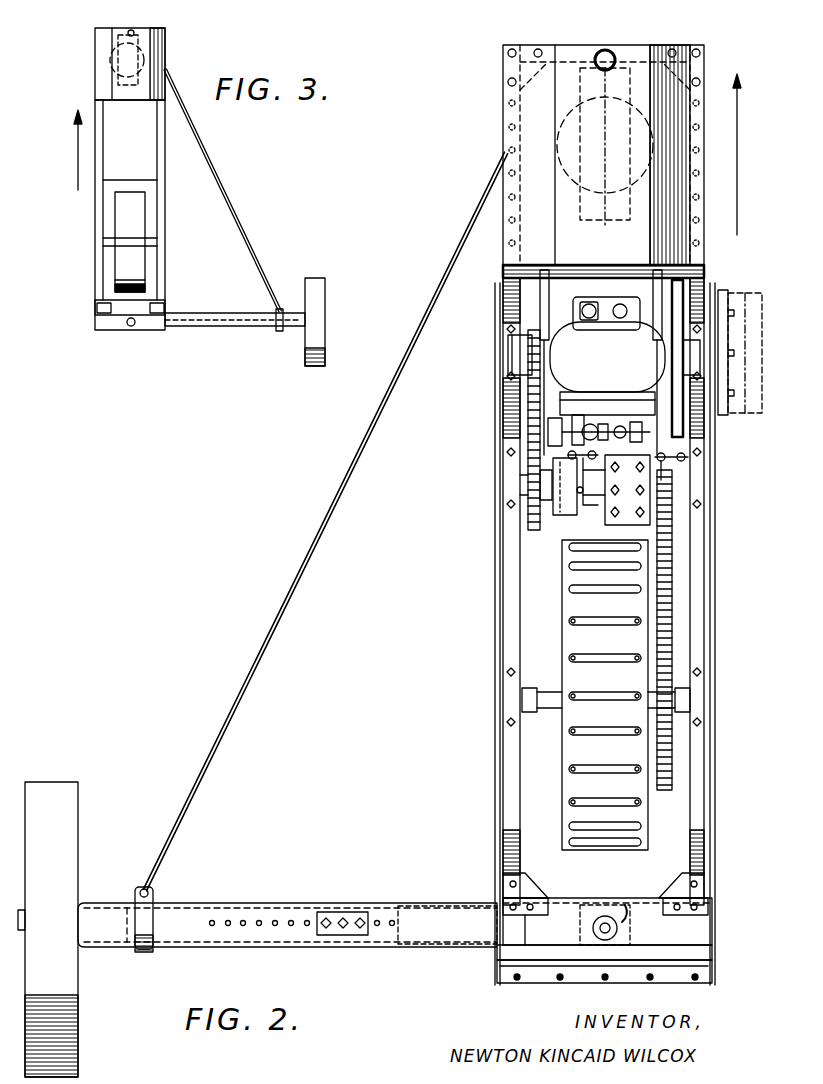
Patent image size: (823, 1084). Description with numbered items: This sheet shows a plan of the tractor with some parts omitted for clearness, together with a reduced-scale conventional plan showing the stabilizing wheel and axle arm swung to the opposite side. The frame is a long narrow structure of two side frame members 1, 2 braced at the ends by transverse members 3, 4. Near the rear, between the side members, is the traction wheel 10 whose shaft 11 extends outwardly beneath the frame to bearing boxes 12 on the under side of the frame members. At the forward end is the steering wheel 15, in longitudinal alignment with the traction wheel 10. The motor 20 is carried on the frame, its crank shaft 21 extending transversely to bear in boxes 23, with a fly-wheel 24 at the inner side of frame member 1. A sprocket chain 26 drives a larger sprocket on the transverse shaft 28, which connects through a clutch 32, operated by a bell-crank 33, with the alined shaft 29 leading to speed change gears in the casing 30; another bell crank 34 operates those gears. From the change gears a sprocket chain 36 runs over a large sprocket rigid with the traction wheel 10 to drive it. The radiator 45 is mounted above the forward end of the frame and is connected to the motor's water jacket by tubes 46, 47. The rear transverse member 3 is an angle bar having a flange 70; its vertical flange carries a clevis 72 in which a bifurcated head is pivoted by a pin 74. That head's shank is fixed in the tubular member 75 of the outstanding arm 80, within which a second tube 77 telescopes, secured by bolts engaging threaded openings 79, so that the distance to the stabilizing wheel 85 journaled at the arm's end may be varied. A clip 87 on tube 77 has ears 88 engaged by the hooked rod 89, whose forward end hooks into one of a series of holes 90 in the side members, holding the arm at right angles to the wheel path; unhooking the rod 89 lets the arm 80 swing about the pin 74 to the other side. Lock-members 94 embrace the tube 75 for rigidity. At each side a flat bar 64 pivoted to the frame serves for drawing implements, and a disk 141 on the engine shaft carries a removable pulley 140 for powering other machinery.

In FIG. 2, the side frame member 1 is at (700, 590).
In FIG. 2, the side frame member 2 is at (520, 600).
In FIG. 2, the transverse member 3 is at (627, 905).
In FIG. 2, the transverse member 4 is at (560, 62).
In FIG. 3, the traction wheel 10 is at (130, 242).
In FIG. 2, the traction wheel 10 is at (605, 695).
In FIG. 2, the shaft 11 is at (545, 712).
In FIG. 2, the bearing boxes 12 is at (530, 686).
In FIG. 3, the steering wheel 15 is at (143, 40).
In FIG. 2, the steering wheel 15 is at (618, 222).
In FIG. 2, the motor 20 is at (607, 357).
In FIG. 2, the crank shaft 21 is at (660, 318).
In FIG. 2, the boxes 23 is at (510, 362).
In FIG. 2, the fly-wheel 24 is at (676, 400).
In FIG. 2, the sprocket chain 26 is at (530, 425).
In FIG. 2, the transverse shaft 28 is at (528, 482).
In FIG. 2, the alined shaft 29 is at (592, 507).
In FIG. 2, the casing 30 is at (627, 490).
In FIG. 2, the clutch 32 is at (565, 516).
In FIG. 2, the bell-crank 33 is at (593, 449).
In FIG. 2, the bell crank 34 is at (675, 450).
In FIG. 2, the sprocket chain 36 is at (670, 625).
In FIG. 2, the radiator 45 is at (591, 145).
In FIG. 2, the tube 46 is at (560, 270).
In FIG. 2, the tube 47 is at (607, 325).
In FIG. 2, the flat bar 64 is at (497, 580).
In FIG. 2, the flange 70 is at (715, 915).
In FIG. 2, the clevis 72 is at (625, 905).
In FIG. 3, the pin 74 is at (131, 326).
In FIG. 2, the pin 74 is at (618, 928).
In FIG. 2, the tubular member 75 is at (430, 935).
In FIG. 2, the second tube 77 is at (222, 915).
In FIG. 2, the threaded openings 79 is at (292, 926).
In FIG. 3, the outstanding arm 80 is at (212, 313).
In FIG. 2, the outstanding arm 80 is at (262, 903).
In FIG. 3, the stabilizing wheel 85 is at (325, 294).
In FIG. 2, the stabilizing wheel 85 is at (78, 800).
In FIG. 2, the clip 87 is at (143, 952).
In FIG. 2, the ears 88 is at (140, 888).
In FIG. 3, the rod 89 is at (242, 222).
In FIG. 2, the rod 89 is at (185, 838).
In FIG. 2, the holes 90 is at (509, 151).
In FIG. 2, the lock-members or clips 94 is at (706, 893).
In FIG. 2, the pulley 140 is at (745, 293).
In FIG. 2, the disk 141 is at (724, 412).